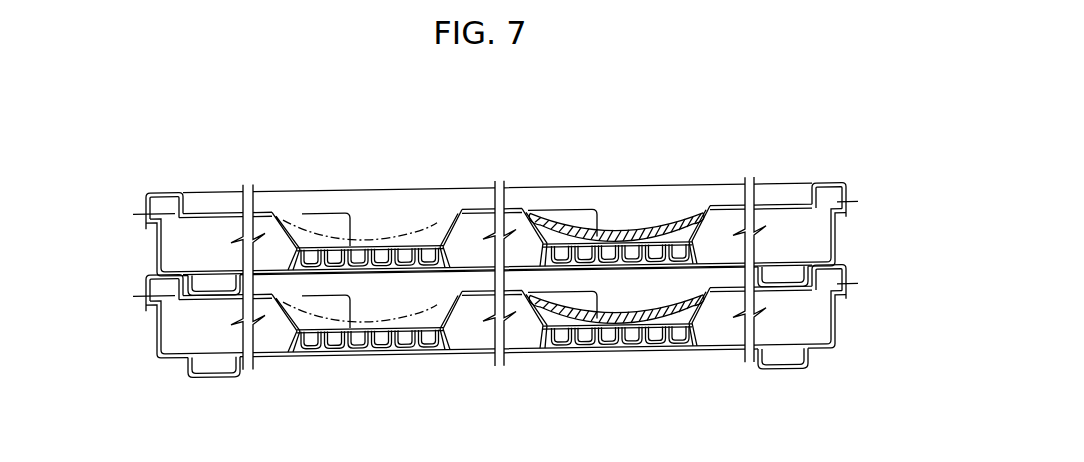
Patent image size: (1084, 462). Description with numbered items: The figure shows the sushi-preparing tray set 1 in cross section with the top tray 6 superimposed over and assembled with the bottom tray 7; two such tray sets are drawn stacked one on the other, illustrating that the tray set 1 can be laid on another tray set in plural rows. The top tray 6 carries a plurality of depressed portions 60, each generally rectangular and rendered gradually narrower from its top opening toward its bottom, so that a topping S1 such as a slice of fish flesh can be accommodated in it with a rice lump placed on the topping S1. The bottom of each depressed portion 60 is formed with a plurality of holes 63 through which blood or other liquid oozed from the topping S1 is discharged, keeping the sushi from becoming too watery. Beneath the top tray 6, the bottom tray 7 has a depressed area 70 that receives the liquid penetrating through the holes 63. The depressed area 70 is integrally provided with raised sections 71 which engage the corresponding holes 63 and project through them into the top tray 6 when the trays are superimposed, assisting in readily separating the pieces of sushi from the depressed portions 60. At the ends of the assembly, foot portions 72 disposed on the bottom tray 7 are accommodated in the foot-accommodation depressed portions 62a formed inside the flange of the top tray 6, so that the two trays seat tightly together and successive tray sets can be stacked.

The tray set 1 is at (98, 169).
The top tray 6 is at (150, 188).
The bottom tray 7 is at (157, 242).
The depressed portion 60 is at (403, 219).
The foot-accommodation depressed portion 62a is at (805, 290).
The hole 63 is at (390, 248).
The depressed area 70 is at (275, 265).
The raised section 71 is at (303, 242).
The foot portion 72 is at (797, 263).
The topping S1 is at (643, 229).